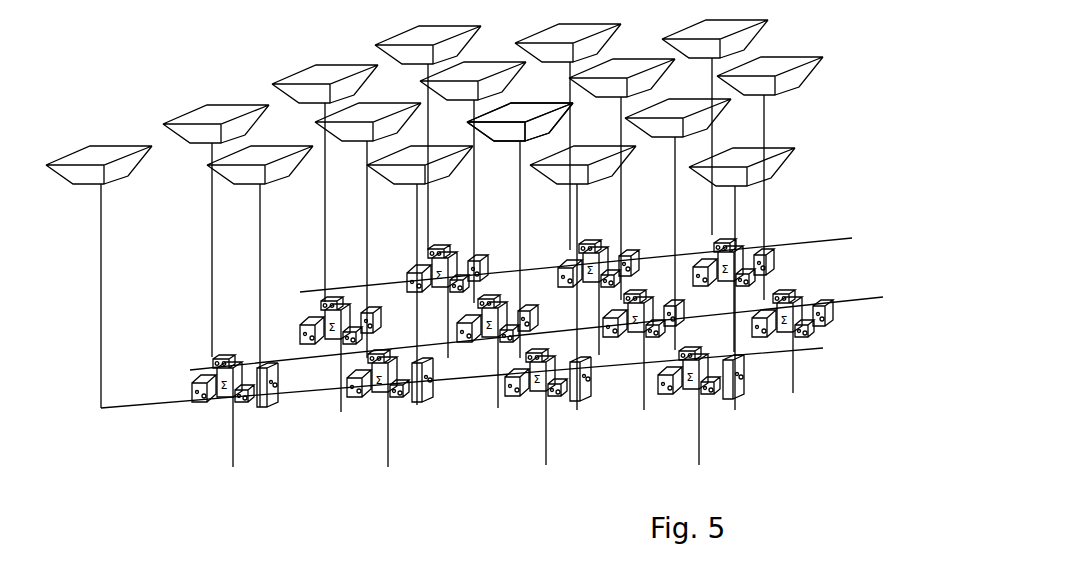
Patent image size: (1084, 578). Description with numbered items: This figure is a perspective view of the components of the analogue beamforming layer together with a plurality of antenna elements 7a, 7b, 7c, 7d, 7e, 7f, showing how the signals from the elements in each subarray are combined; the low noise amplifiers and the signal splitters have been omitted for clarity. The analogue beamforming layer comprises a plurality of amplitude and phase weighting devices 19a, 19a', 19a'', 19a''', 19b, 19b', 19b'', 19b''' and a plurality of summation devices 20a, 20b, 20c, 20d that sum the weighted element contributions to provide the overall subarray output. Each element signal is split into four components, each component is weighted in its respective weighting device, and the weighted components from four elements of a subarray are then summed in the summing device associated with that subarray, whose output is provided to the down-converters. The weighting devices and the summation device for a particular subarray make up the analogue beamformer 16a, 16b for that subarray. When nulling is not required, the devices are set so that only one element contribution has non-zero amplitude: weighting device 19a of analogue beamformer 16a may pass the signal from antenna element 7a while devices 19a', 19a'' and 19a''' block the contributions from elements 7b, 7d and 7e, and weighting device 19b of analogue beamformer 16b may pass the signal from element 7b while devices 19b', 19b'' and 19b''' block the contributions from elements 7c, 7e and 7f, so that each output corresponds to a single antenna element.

The antenna element 7a is at (84, 177).
The antenna element 7b is at (251, 177).
The antenna element 7c is at (392, 180).
The antenna element 7d is at (210, 113).
The antenna element 7e is at (342, 128).
The antenna element 7f is at (507, 133).
The analogue beamformer 16a is at (226, 424).
The analogue beamformer 16b is at (355, 408).
The amplitude and phase weighting device 19a is at (226, 392).
The amplitude and phase weighting device 19a' is at (260, 415).
The amplitude and phase weighting device 19a'' is at (178, 410).
The amplitude and phase weighting device 19a''' is at (284, 417).
The amplitude and phase weighting device 19b is at (355, 379).
The amplitude and phase weighting device 19b' is at (415, 415).
The amplitude and phase weighting device 19b'' is at (342, 405).
The amplitude and phase weighting device 19b''' is at (453, 397).
The summation device 20a is at (200, 355).
The summation device 20b is at (307, 342).
The summation device 20c is at (578, 421).
The summation device 20d is at (329, 338).